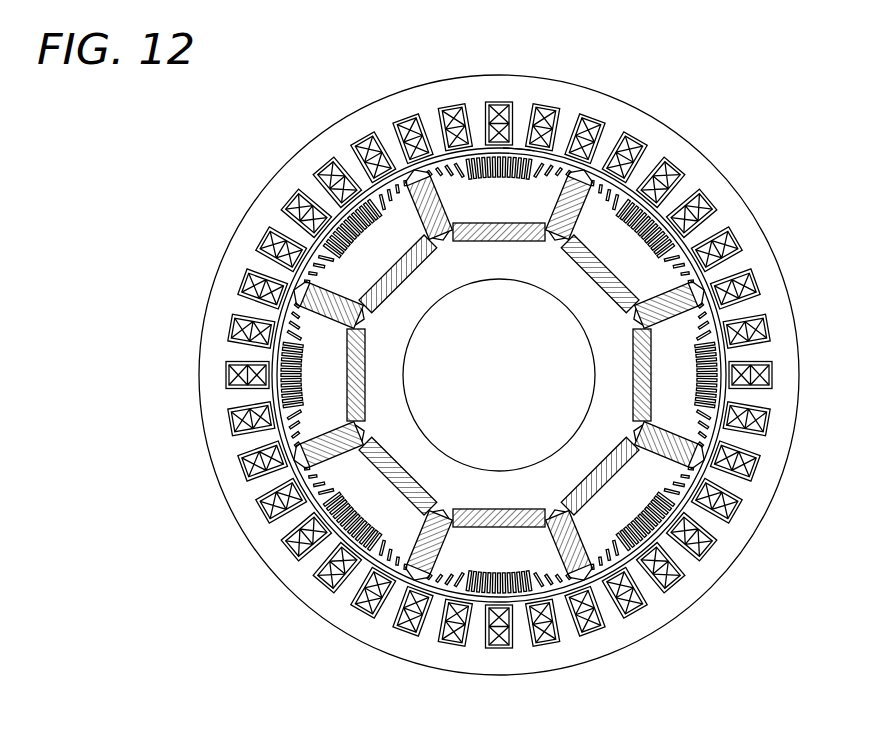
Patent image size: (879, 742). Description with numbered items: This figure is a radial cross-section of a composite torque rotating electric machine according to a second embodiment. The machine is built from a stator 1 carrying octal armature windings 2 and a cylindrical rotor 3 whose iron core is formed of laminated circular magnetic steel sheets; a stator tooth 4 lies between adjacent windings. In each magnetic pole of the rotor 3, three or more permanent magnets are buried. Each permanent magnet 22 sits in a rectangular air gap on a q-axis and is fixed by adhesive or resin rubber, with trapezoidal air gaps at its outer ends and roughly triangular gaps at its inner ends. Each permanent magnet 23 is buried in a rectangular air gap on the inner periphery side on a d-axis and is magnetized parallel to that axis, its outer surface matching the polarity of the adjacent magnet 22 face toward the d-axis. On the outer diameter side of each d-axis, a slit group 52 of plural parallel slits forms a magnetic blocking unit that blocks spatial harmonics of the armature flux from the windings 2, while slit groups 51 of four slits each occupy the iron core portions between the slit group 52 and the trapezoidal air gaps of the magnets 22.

The stator 1 is at (282, 205).
The armature windings 2 is at (363, 140).
The rotor 3 is at (403, 418).
The stator tooth 4 is at (518, 140).
The permanent magnet 22 is at (403, 170).
The permanent magnet 23 is at (503, 247).
The slit group 51 is at (440, 158).
The slit group 52 is at (478, 157).